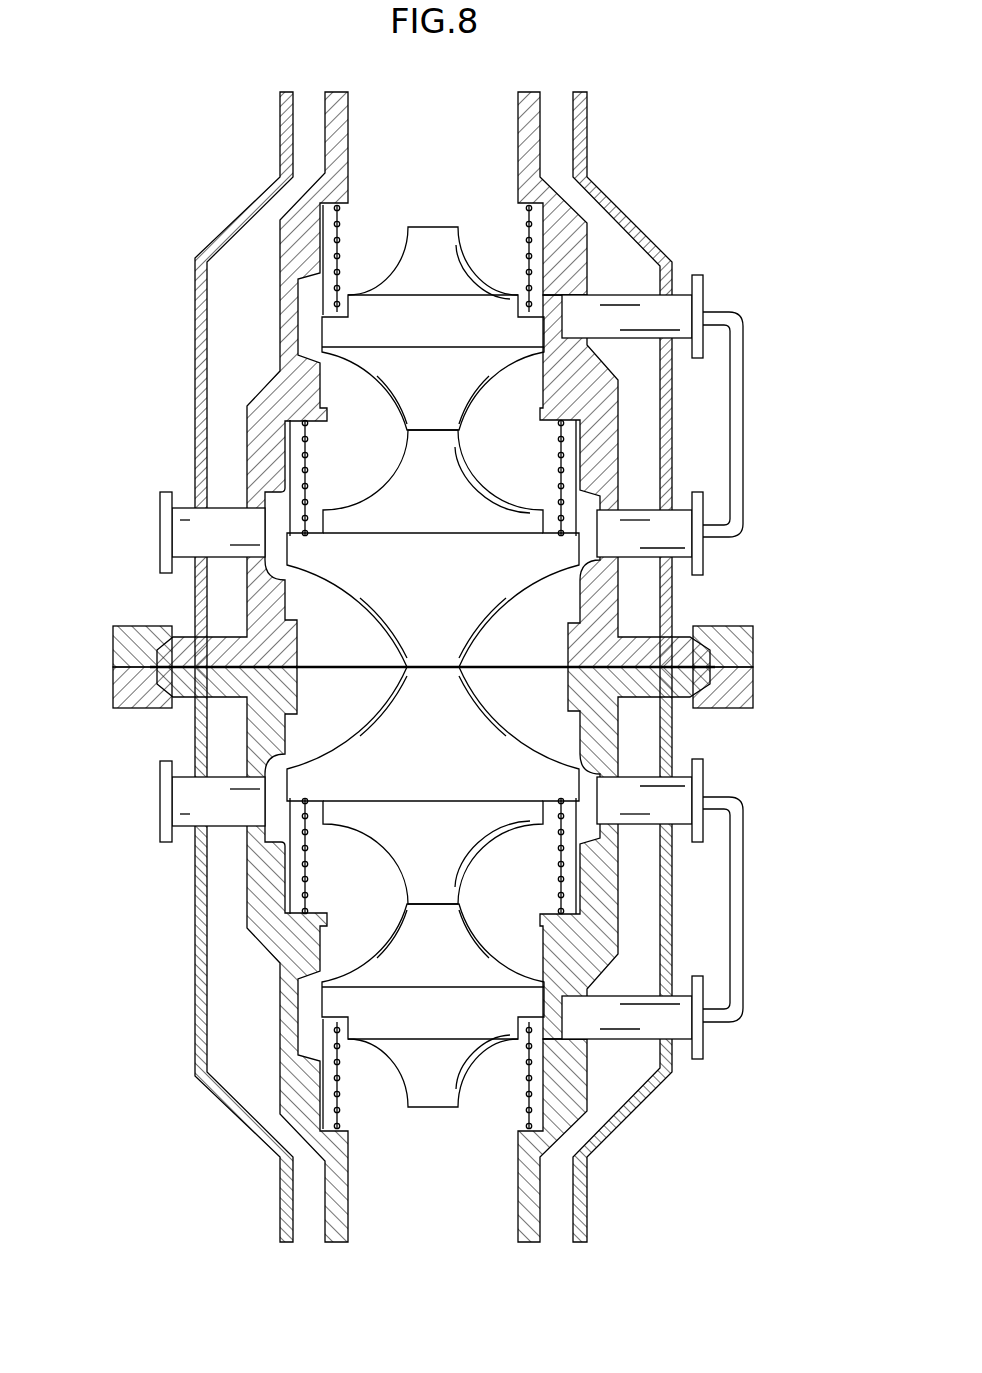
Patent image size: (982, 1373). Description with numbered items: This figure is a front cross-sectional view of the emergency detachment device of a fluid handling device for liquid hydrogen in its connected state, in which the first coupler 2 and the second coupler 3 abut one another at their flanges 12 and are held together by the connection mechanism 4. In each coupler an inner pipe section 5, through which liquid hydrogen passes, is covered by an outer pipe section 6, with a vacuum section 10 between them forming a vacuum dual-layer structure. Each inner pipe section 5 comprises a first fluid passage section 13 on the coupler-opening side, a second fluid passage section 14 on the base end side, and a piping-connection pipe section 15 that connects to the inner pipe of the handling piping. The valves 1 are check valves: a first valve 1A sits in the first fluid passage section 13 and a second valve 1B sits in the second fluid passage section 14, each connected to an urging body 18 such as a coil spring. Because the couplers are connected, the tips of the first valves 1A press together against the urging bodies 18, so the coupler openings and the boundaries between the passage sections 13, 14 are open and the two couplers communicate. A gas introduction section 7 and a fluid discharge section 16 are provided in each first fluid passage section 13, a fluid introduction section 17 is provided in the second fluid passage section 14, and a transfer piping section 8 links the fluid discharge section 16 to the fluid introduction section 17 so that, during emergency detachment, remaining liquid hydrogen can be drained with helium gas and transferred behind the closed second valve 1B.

The valve 1 is at (479, 670).
The first valve 1A is at (500, 582).
The second valve 1B is at (402, 268).
The first coupler 2 is at (225, 205).
The second coupler 3 is at (197, 1107).
The connection mechanism 4 is at (125, 650).
The inner pipe section 5 is at (243, 423).
The outer pipe section 6 is at (197, 300).
The gas introduction section 7 is at (167, 518).
The transfer piping section 8 is at (737, 428).
The vacuum section 10 is at (243, 333).
The flange 12 is at (692, 648).
The first fluid passage section 13 is at (340, 608).
The second fluid passage section 14 is at (505, 263).
The piping-connection pipe section 15 is at (505, 128).
The fluid discharge section 16 is at (683, 542).
The fluid introduction section 17 is at (688, 307).
The urging body 18 is at (540, 238).